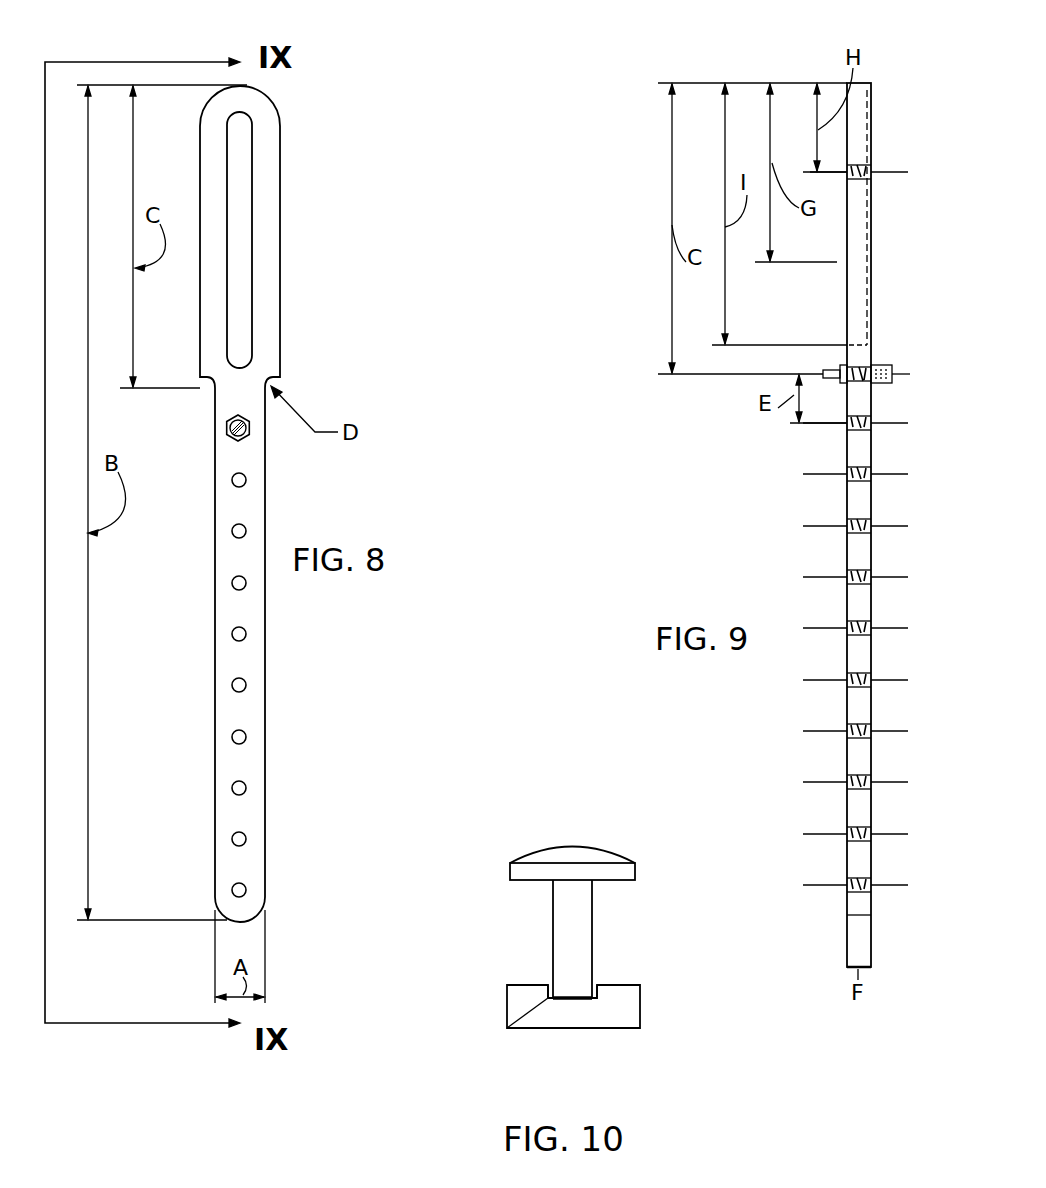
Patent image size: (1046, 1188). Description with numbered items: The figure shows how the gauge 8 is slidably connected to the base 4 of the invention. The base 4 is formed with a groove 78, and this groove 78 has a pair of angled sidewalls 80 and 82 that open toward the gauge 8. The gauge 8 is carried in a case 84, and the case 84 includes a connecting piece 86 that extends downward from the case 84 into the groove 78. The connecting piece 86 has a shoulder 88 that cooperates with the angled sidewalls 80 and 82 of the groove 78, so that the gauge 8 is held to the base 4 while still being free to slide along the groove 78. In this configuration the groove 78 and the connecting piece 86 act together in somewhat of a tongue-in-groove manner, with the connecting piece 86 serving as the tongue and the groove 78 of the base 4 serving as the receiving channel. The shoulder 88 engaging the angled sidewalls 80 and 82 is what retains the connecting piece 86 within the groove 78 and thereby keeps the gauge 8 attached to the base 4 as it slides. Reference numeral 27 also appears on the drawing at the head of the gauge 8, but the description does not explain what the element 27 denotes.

The base 4 is at (567, 1017).
The gauge 8 is at (563, 892).
The knob head 27 is at (630, 870).
The groove 78 is at (507, 1028).
The angled sidewall 80 is at (548, 993).
The angled sidewall 82 is at (595, 1002).
The case 84 is at (583, 907).
The connecting piece 86 is at (573, 980).
The shoulder 88 is at (547, 980).